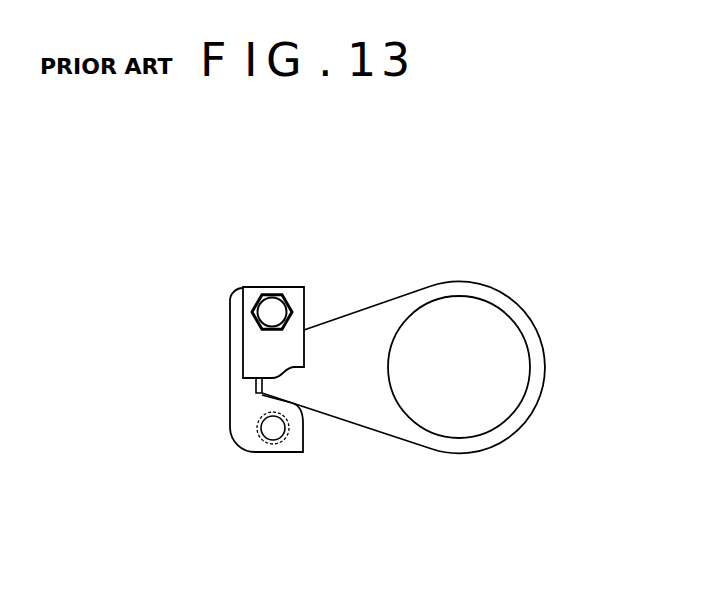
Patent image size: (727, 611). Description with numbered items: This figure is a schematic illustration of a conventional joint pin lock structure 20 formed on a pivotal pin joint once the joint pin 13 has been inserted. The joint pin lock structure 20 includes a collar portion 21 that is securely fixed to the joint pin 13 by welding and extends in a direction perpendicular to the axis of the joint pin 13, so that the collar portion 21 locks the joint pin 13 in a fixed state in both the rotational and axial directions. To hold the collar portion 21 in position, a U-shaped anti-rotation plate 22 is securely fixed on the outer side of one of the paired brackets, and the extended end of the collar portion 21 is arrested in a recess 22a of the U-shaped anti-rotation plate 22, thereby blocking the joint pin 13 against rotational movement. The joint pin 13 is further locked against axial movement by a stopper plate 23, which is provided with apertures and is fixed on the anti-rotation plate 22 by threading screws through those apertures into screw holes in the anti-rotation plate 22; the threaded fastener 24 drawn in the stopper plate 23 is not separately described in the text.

The joint pin 13 is at (492, 325).
The joint pin lock structure 20 is at (232, 329).
The collar portion 21 is at (378, 422).
The U-shaped anti-rotation plate 22 is at (246, 432).
The recess 22a is at (263, 397).
The stopper plate 23 is at (298, 294).
The bolt 24 is at (272, 300).